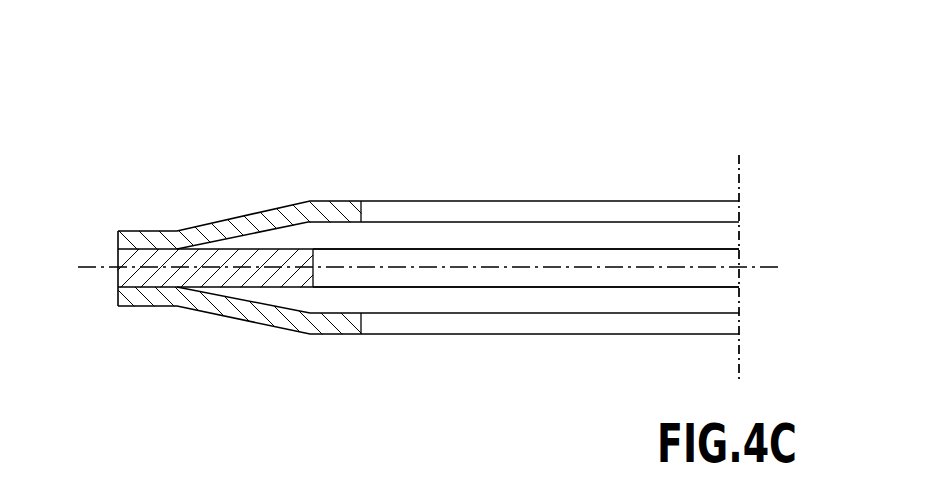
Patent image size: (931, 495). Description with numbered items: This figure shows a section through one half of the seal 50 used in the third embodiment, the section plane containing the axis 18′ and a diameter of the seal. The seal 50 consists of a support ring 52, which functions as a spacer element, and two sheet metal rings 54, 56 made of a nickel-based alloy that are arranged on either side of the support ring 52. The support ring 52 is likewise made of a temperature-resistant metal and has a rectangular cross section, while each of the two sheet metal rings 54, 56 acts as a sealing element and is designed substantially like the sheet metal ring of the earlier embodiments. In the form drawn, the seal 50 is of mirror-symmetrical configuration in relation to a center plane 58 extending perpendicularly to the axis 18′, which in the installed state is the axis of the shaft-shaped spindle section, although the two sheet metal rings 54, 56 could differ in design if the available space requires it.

The seal 50 is at (186, 196).
The support ring 52 is at (118, 277).
The sheet metal ring 54 is at (333, 212).
The sheet metal ring 56 is at (260, 322).
The center plane 58 is at (603, 267).
The axis 18′ is at (738, 188).